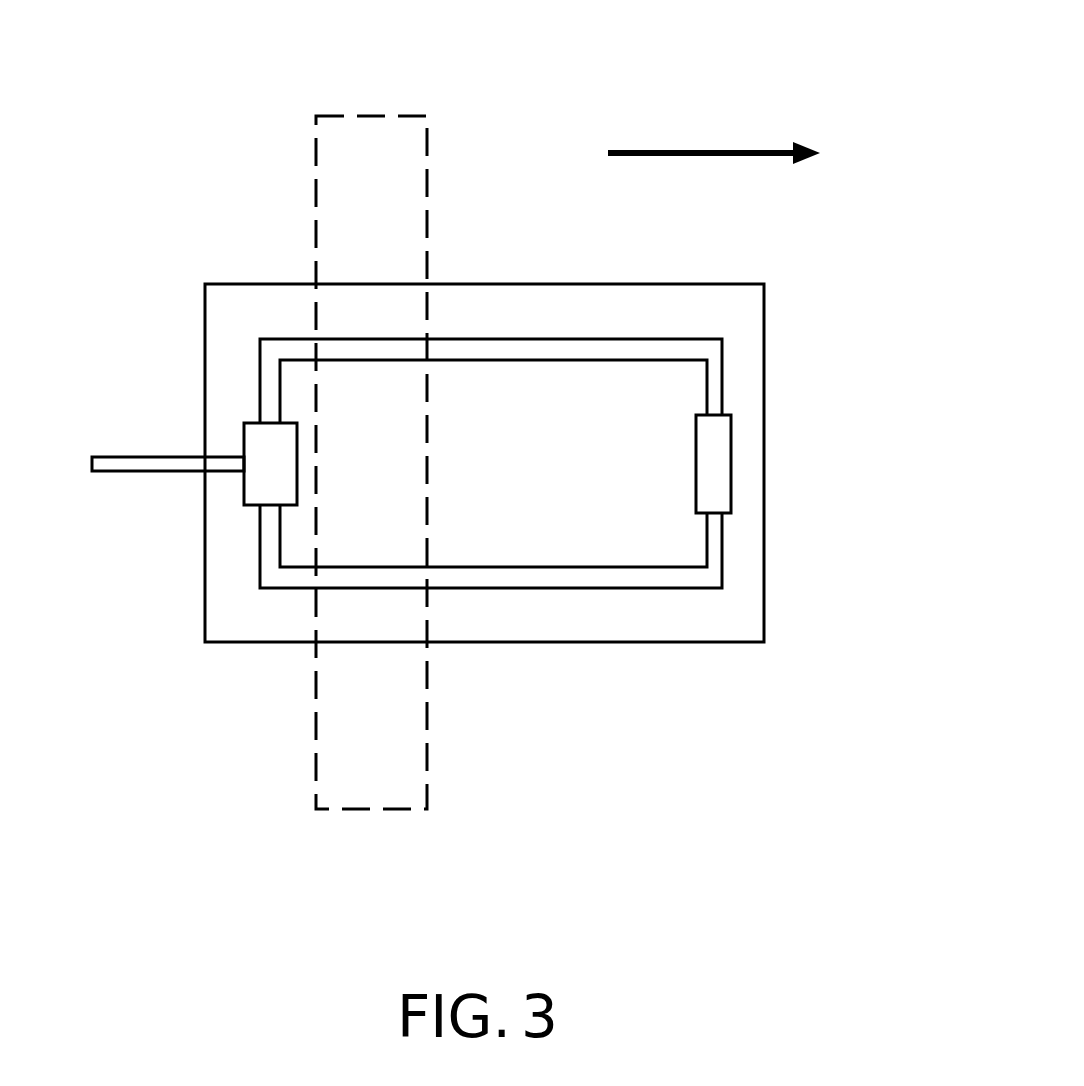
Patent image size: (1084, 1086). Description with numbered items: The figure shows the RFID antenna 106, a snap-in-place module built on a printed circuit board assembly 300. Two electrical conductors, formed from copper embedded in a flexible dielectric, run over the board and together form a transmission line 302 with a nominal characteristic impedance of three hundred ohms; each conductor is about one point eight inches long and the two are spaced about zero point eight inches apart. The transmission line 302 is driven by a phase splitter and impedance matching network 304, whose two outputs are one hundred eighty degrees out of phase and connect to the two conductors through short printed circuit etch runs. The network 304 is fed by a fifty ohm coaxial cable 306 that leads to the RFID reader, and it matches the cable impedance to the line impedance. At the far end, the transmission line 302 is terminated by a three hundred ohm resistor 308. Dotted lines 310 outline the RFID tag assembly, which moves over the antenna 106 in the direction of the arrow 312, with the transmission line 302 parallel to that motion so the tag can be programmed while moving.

The RFID antenna 106 is at (779, 618).
The printed circuit board assembly 300 is at (774, 383).
The transmission line 302 is at (516, 333).
The phase splitter and impedance matching network 304 is at (250, 440).
The coaxial cable 306 is at (108, 479).
The resistor 308 is at (740, 468).
The dotted lines 310 is at (433, 757).
The arrow 312 is at (669, 140).